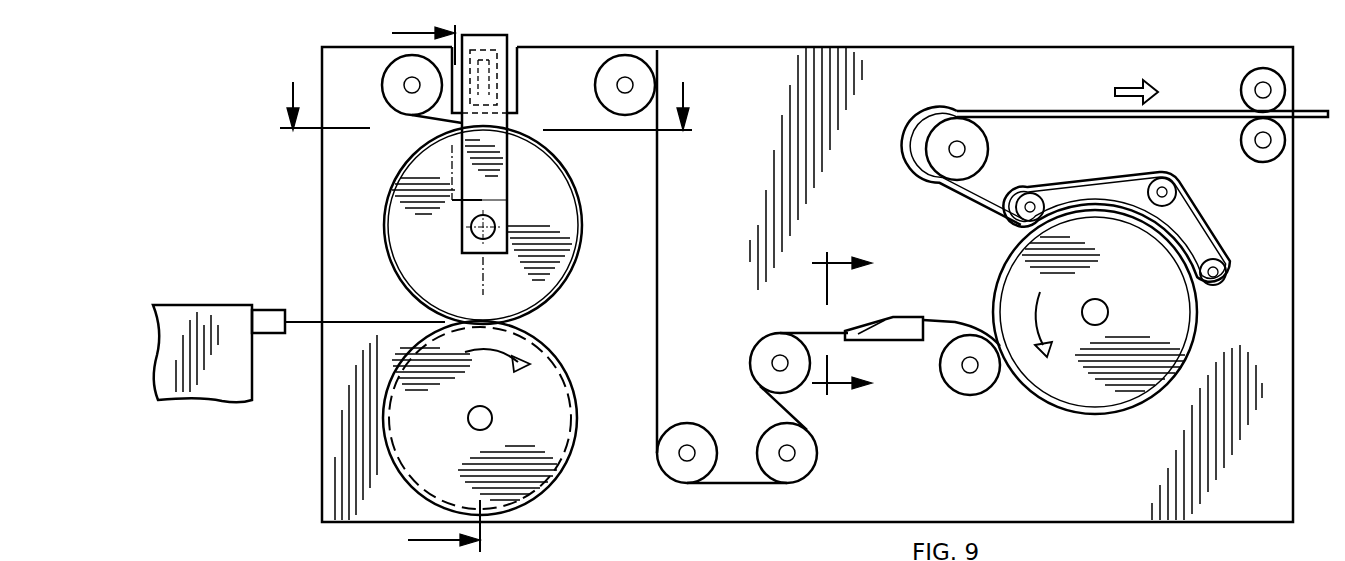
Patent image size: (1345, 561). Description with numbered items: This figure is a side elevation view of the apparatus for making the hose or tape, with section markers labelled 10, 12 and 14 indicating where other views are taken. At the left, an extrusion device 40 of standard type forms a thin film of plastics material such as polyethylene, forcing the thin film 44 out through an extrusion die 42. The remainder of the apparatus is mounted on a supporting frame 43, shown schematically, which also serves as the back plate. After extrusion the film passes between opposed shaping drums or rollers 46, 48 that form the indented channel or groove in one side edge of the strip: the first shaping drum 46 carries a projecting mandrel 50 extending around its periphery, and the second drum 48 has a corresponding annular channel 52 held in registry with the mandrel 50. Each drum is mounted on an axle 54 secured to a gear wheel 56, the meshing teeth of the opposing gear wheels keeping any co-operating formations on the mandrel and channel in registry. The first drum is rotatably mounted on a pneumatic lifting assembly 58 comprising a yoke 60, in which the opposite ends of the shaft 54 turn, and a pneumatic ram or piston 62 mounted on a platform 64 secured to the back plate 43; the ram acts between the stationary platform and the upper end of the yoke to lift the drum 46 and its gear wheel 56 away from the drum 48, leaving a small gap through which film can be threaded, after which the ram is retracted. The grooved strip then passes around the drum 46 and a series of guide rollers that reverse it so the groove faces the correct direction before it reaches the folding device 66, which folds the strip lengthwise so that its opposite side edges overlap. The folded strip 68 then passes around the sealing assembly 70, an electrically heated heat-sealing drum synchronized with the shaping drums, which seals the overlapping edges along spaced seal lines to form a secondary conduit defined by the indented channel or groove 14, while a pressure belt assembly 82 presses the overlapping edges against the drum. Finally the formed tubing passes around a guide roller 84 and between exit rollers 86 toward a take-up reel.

The section line 10- 10 is at (490, 93).
The section line 12- 12 is at (420, 288).
The indented channel or groove 14 is at (860, 324).
The extrusion device 40 is at (192, 312).
The extrusion die 42 is at (280, 312).
The supporting frame 43 is at (322, 202).
The thin film 44 is at (360, 320).
The first shaping drum 46 is at (565, 245).
The second shaping drum 48 is at (550, 423).
The mandrel 50 is at (400, 196).
The annular channel 52 is at (567, 392).
The axle 54 is at (470, 232).
The gear wheel 56 is at (538, 447).
The pneumatic lifting assembly 58 is at (508, 199).
The yoke 60 is at (488, 166).
The pneumatic ram or piston 62 is at (500, 95).
The platform 64 is at (507, 113).
The folding device 66 is at (905, 322).
The folded strip 68 is at (1071, 412).
The sealing assembly 70 is at (1002, 275).
The pressure belt assembly 82 is at (1180, 235).
The guide roller 84 is at (988, 147).
The exit rollers 86 is at (1272, 128).